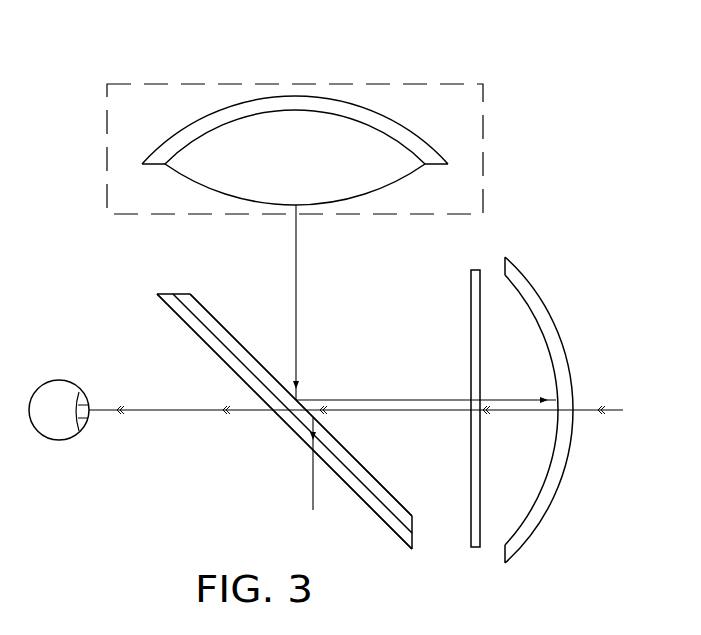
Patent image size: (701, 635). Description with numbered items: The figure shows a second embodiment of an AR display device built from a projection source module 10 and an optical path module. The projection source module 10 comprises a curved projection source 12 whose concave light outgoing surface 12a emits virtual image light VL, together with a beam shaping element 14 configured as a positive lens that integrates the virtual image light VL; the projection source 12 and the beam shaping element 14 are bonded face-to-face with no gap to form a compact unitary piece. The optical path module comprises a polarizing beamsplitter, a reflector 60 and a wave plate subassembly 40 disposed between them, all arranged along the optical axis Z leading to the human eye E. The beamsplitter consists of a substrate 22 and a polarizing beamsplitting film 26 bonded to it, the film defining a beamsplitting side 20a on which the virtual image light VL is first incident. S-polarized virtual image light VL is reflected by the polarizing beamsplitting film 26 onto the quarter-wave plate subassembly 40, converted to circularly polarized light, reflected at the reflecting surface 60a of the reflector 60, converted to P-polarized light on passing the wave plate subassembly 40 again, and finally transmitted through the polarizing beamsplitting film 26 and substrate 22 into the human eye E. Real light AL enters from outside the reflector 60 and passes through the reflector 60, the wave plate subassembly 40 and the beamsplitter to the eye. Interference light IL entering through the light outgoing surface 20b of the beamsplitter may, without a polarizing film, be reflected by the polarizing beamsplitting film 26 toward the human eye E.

The projection source module 10 is at (203, 83).
The projection source 12 is at (289, 105).
The light outgoing surface 12a is at (233, 123).
The beam shaping element 14 is at (357, 145).
The beamsplitting side 20a is at (238, 342).
The light outgoing surface 20b is at (284, 419).
The substrate 22 is at (400, 530).
The polarizing beamsplitting film 26 is at (400, 507).
The wave plate subassembly 40 is at (473, 310).
The reflector 60 is at (530, 300).
The reflecting surface 60a is at (507, 273).
The human eye E is at (52, 382).
The virtual image light VL is at (312, 302).
The interference light IL is at (324, 464).
The real light AL is at (453, 394).
The optical axis Z is at (364, 412).